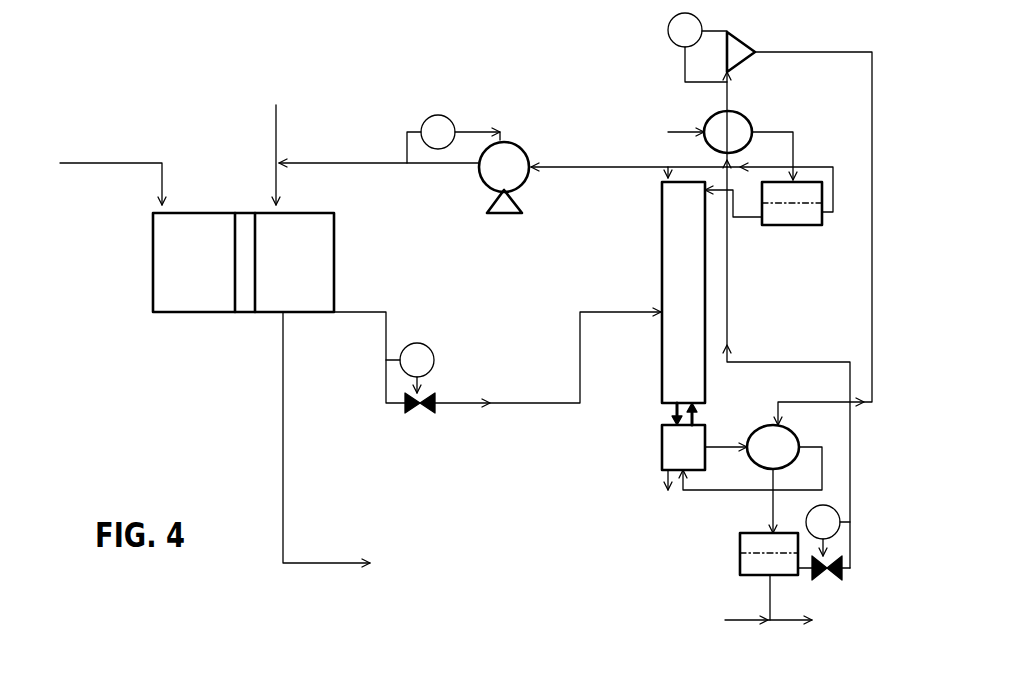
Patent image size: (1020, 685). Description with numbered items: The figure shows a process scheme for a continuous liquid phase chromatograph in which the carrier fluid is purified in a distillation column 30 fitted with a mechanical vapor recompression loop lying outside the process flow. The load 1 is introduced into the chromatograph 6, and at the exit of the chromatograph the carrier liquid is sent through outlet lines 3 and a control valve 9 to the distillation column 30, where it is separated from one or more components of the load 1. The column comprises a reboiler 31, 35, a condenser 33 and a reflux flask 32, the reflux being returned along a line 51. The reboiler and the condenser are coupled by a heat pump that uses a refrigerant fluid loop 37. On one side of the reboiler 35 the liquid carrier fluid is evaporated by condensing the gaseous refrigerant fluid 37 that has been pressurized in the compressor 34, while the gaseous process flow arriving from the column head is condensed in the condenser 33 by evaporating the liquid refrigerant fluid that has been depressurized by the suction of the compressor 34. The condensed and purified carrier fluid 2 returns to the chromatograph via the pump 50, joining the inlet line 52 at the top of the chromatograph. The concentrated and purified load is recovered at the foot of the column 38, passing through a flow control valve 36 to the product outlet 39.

The load 1 is at (133, 163).
The condensed and purified carrier fluid 2 is at (355, 163).
The reactor outlet lines 3 is at (357, 312).
The chromatograph 6 is at (200, 298).
The pressure control valve 9 is at (421, 413).
The distillation column 30 is at (672, 252).
The reboiler 31 is at (668, 457).
The reflux flask 32 is at (797, 216).
The condenser 33 is at (727, 123).
The compressor 34 is at (735, 46).
The reboiler 35 is at (764, 432).
The flow control valve 36 is at (793, 568).
The refrigerant fluid loop 37 is at (868, 97).
The foot of column 38 is at (664, 489).
The product outlet line 39 is at (750, 622).
The pump 50 is at (532, 163).
The reflux return line 51 is at (819, 165).
The feed inlet line 52 is at (276, 133).